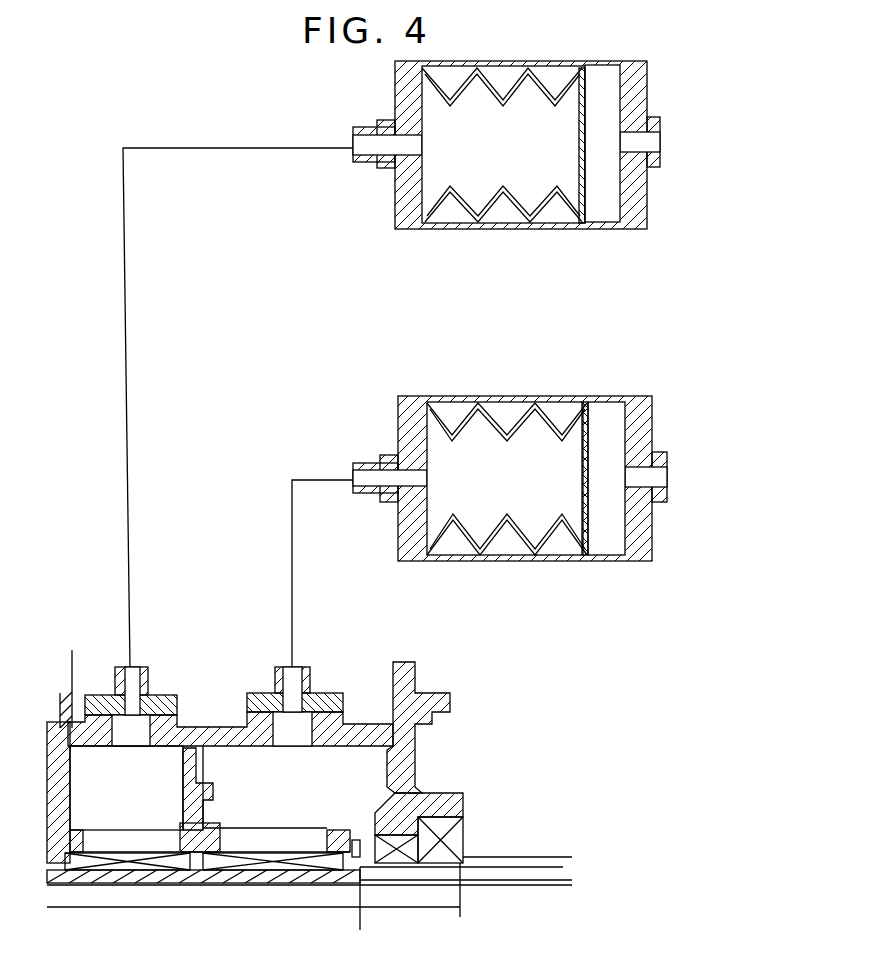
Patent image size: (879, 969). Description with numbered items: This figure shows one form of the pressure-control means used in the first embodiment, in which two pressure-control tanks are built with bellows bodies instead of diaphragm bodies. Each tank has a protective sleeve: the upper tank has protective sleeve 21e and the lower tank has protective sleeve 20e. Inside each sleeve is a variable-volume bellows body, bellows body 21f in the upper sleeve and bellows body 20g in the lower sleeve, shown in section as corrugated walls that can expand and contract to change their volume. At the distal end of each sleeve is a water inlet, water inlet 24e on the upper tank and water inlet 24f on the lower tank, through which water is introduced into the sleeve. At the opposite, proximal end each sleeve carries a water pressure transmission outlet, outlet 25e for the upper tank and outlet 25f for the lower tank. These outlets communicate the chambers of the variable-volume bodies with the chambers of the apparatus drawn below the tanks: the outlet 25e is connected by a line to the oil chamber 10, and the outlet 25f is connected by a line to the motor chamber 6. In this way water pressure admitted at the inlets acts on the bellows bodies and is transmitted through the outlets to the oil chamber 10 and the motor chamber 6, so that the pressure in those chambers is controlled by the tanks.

The bellows body 21f is at (551, 82).
The protective sleeve 21e is at (500, 229).
The water inlet 24e is at (652, 142).
The water pressure transmission outlet 25e is at (364, 135).
The bellows body 20g is at (556, 410).
The protective sleeve 20e is at (531, 560).
The water inlet 24f is at (656, 471).
The water pressure transmission outlet 25f is at (372, 474).
The oil chamber 10 is at (142, 815).
The motor chamber 6 is at (305, 815).